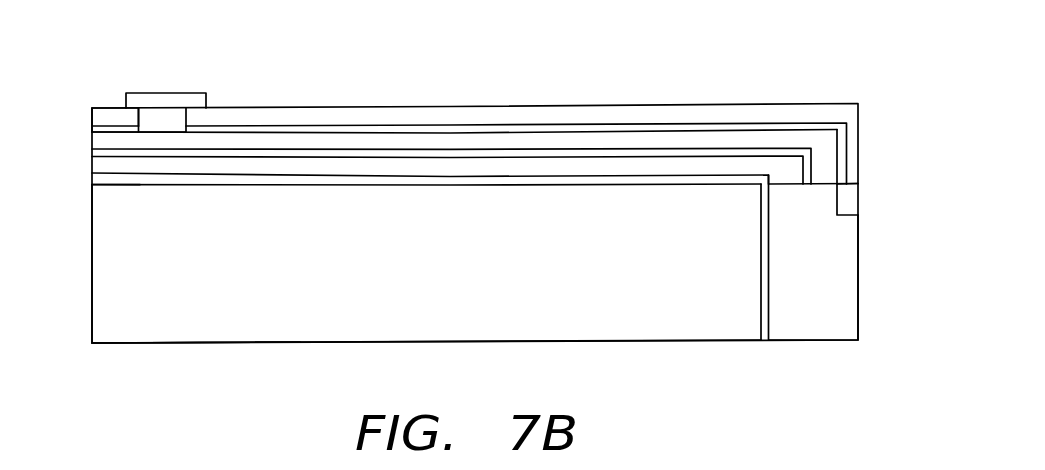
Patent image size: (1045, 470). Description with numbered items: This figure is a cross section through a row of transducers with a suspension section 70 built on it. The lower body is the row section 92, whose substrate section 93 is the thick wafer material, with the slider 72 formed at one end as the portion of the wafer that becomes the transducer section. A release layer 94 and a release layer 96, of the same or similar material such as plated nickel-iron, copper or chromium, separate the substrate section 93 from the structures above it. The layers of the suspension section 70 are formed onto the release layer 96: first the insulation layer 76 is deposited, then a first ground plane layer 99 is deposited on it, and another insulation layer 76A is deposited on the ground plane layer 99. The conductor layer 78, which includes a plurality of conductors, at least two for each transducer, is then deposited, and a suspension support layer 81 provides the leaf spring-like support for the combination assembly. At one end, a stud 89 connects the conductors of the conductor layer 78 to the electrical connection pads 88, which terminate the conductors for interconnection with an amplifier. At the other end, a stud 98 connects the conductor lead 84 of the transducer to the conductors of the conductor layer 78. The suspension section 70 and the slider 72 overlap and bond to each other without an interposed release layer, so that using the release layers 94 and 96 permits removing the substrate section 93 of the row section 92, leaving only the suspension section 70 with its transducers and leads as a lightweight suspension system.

The suspension section 70 is at (445, 106).
The slider 72 is at (813, 330).
The row section 92 is at (453, 281).
The substrate section 93 is at (167, 332).
The release layer 94 is at (765, 341).
The release layer 96 is at (113, 185).
The insulation layer 76 is at (101, 174).
The first ground plane layer 99 is at (101, 155).
The insulation layer 76A is at (101, 143).
The conductor layer 78 is at (97, 129).
The suspension support layer 81 is at (116, 113).
The electrical connection pads 88 is at (168, 93).
The stud 89 is at (175, 117).
The stud 98 is at (841, 152).
The conductor lead 84 is at (850, 200).